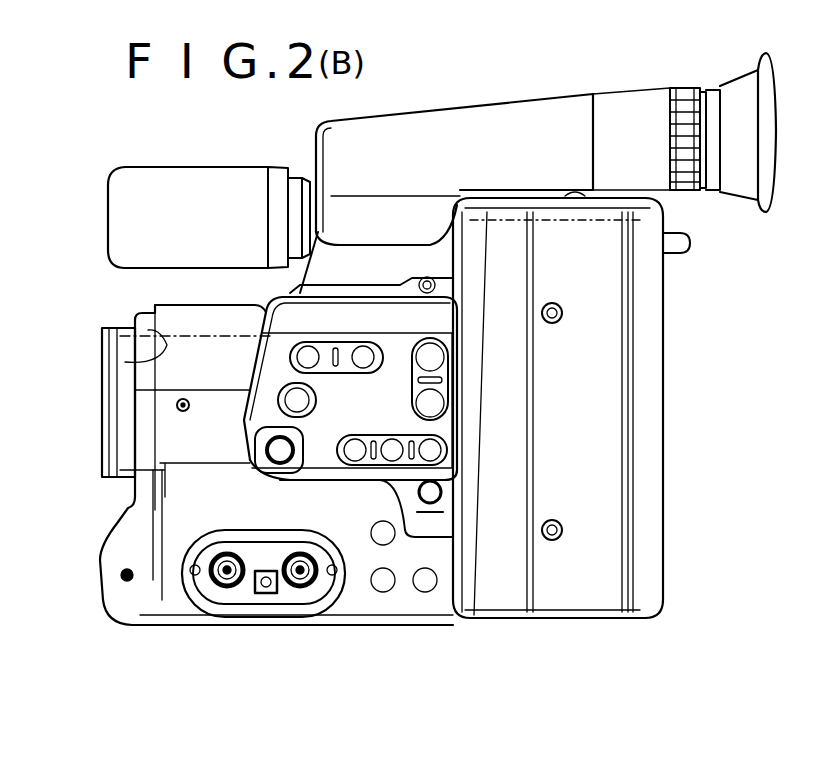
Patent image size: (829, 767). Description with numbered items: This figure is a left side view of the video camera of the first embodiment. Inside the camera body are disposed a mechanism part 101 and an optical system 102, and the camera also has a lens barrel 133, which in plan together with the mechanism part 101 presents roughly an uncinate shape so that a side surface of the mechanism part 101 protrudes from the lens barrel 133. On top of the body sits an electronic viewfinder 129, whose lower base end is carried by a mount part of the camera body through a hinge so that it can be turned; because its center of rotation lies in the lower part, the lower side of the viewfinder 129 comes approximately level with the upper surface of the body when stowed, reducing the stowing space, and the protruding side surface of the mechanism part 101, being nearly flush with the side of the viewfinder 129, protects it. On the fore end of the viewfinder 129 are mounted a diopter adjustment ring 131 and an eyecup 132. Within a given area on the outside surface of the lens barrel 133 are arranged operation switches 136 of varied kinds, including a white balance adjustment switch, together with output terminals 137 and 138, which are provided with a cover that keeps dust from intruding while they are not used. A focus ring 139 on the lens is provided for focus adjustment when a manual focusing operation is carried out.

The mechanism part 101 is at (597, 357).
The optical system 102 is at (122, 362).
The electronic viewfinder 129 is at (314, 143).
The diopter adjustment ring 131 is at (684, 95).
The eyecup 132 is at (740, 95).
The lens barrel 133 is at (190, 317).
The operation switches 136 is at (372, 344).
The output terminal 137 is at (225, 590).
The output terminal 138 is at (298, 590).
The focus ring 139 is at (124, 430).